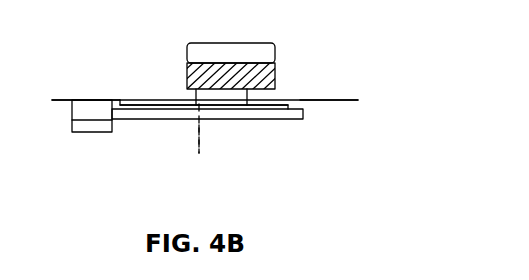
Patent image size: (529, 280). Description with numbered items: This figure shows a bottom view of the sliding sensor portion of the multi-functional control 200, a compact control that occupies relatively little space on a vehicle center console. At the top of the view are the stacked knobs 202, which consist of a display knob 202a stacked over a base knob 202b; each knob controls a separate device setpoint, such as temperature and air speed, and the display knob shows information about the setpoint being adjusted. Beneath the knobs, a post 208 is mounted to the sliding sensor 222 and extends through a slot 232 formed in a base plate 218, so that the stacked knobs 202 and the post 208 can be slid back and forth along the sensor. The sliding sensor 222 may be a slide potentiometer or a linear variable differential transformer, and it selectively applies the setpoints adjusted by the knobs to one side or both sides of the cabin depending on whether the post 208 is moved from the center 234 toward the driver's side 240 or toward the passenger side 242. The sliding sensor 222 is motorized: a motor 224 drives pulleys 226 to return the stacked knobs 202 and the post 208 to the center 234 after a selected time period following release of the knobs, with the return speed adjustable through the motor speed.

The multi-functional control 200 is at (305, 33).
The stacked knobs 202 is at (230, 67).
The display knob 202a is at (187, 62).
The base knob 202b is at (187, 73).
The post 208 is at (242, 100).
The base plate 218 is at (85, 100).
The sliding sensor 222 is at (303, 113).
The motor 224 is at (97, 127).
The pulleys 226 is at (147, 119).
The slot 232 is at (190, 118).
The center 234 is at (200, 138).
The driver's side 240 is at (55, 103).
The passenger side 242 is at (353, 100).